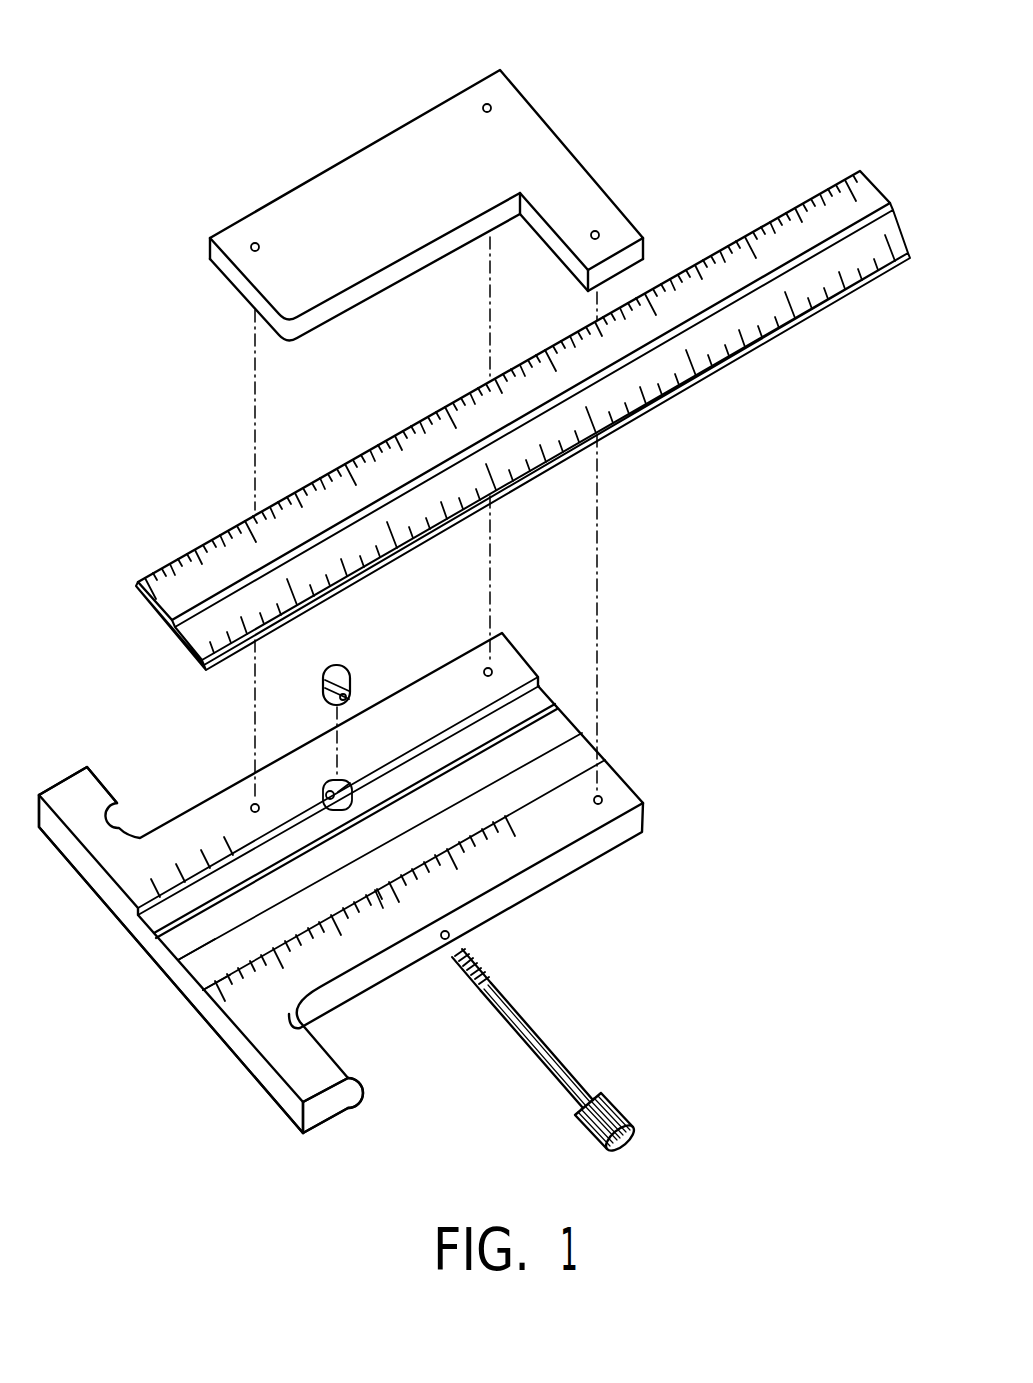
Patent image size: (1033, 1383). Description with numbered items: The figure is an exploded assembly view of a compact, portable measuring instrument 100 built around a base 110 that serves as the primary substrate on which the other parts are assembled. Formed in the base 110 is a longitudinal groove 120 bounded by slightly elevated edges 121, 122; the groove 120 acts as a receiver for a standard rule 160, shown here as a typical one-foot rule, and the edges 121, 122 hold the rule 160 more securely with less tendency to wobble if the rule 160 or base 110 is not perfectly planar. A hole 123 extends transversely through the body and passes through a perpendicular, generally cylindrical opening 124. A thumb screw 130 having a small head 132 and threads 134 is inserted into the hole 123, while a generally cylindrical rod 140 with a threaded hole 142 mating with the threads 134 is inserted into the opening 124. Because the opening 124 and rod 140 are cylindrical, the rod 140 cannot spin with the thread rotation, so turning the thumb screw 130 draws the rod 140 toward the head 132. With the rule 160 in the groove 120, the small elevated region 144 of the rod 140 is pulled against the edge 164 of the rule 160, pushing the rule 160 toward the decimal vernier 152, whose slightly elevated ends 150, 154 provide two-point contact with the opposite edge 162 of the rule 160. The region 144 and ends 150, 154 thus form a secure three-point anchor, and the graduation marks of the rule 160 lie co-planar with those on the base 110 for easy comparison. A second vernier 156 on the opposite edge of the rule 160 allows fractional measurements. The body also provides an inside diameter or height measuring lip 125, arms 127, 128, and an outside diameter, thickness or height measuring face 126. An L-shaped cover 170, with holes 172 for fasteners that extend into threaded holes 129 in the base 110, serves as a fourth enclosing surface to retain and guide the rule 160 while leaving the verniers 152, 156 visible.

The instrument 100 is at (748, 40).
The base 110 is at (584, 586).
The longitudinal groove 120 is at (583, 730).
The elevated edge 121 is at (593, 737).
The elevated edge 122 is at (554, 708).
The hole 123 is at (451, 933).
The perpendicular opening 124 is at (354, 786).
The inside diameter or height measuring lip 125 is at (361, 1088).
The outside diameter or thickness or height measuring face 126 is at (262, 1063).
The arm 127 is at (306, 1083).
The arm 128 is at (78, 798).
The threaded hole 129 is at (255, 803).
The thumb screw 130 is at (545, 1035).
The head 132 is at (615, 1115).
The threads 134 is at (492, 966).
The cylindrical rod 140 is at (346, 697).
The threaded hole 142 is at (347, 700).
The elevated region 144 is at (336, 667).
The end 150 is at (178, 990).
The vernier 152 is at (203, 985).
The end 154 is at (520, 812).
The vernier 156 is at (163, 938).
The rule 160 is at (814, 214).
The edge 162 is at (805, 300).
The edge 164 is at (724, 240).
The cover 170 is at (360, 195).
The holes 172 is at (252, 246).